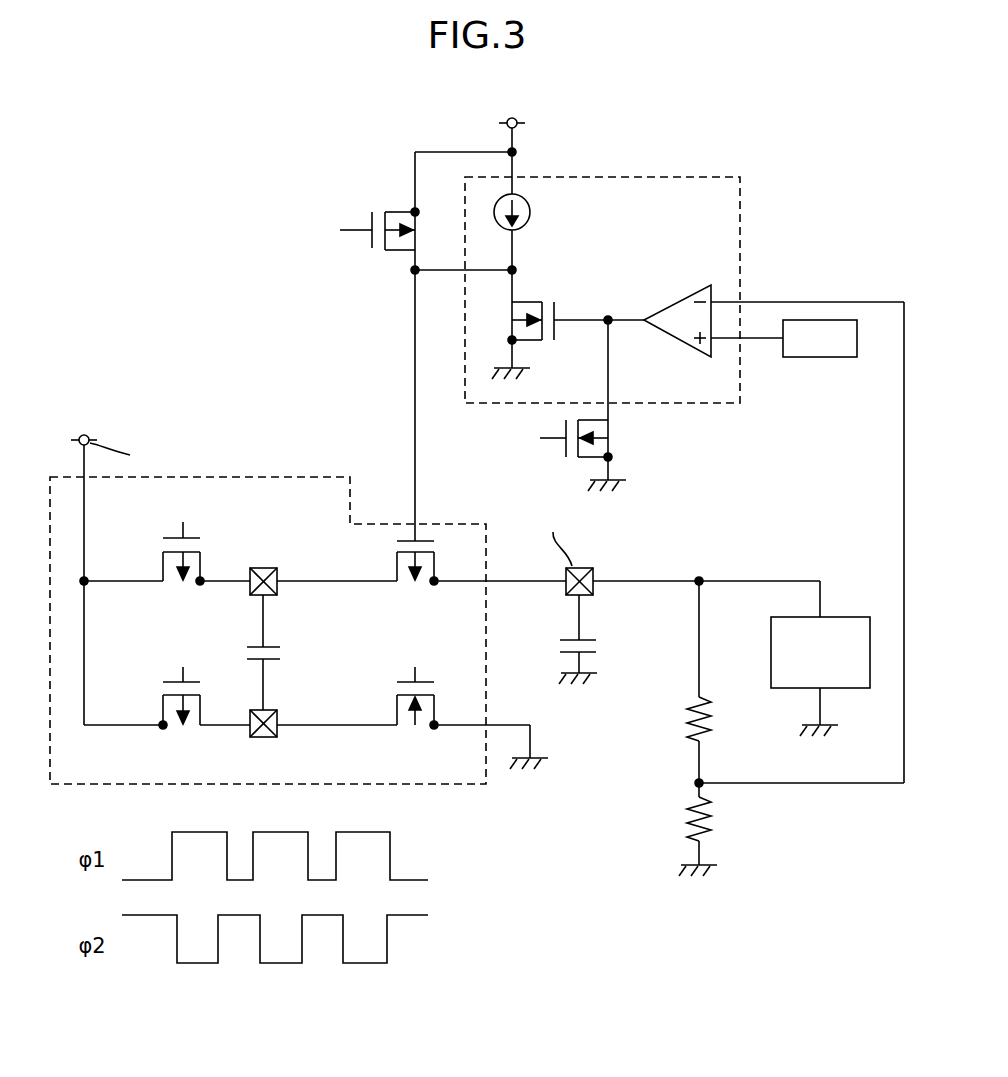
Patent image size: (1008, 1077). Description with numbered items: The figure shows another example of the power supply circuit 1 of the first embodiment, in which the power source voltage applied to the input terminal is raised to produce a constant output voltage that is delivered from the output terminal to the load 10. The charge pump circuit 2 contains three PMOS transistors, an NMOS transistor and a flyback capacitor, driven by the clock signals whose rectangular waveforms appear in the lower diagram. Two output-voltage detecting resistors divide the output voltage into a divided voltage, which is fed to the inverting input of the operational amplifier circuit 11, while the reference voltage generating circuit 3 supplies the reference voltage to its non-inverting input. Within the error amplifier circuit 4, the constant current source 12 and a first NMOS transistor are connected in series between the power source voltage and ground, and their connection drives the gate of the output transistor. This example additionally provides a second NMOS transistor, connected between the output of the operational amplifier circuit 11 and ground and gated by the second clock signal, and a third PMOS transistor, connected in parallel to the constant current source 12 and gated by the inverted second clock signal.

The power supply circuit 1 is at (174, 219).
The charge pump circuit 2 is at (228, 478).
The reference voltage generating circuit 3 is at (836, 358).
The error amplifier circuit 4 is at (658, 178).
The load 10 is at (850, 616).
The operational amplifier circuit 11 is at (664, 300).
The constant current source 12 is at (531, 212).